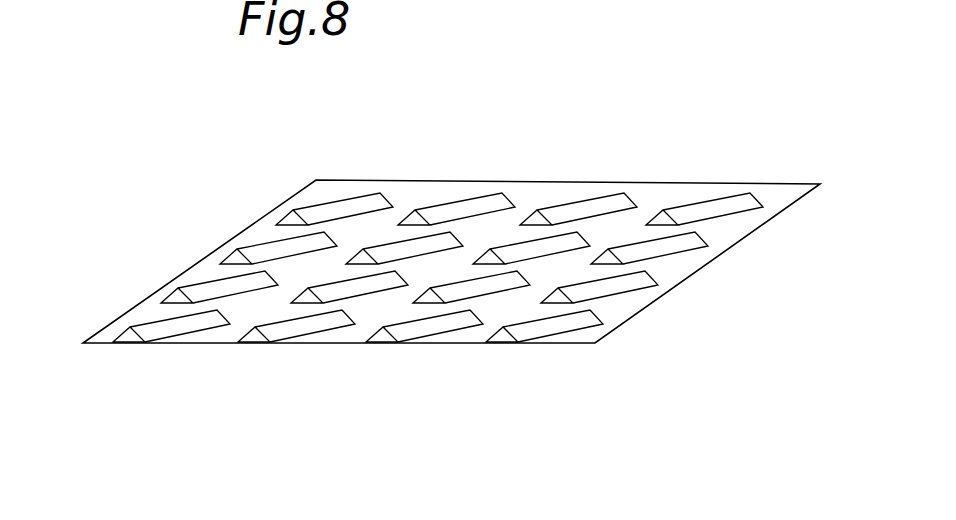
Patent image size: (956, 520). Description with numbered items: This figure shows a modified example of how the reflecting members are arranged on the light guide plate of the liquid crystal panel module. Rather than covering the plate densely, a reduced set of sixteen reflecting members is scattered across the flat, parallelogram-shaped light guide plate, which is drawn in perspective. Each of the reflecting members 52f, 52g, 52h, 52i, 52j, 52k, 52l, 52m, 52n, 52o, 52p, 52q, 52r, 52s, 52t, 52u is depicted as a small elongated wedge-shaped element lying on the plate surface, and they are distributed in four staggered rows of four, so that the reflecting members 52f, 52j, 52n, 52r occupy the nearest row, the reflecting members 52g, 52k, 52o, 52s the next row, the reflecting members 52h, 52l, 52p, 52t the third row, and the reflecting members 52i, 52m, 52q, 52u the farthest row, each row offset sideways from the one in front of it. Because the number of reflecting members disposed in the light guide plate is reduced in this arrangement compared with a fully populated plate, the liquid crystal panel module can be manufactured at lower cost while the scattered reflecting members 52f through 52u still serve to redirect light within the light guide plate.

The reflecting member 52f is at (162, 330).
The reflecting member 52g is at (198, 288).
The reflecting member 52h is at (267, 250).
The reflecting member 52i is at (350, 197).
The reflecting member 52j is at (287, 335).
The reflecting member 52k is at (363, 293).
The reflecting member 52l is at (392, 243).
The reflecting member 52m is at (462, 205).
The reflecting member 52n is at (425, 332).
The reflecting member 52o is at (487, 290).
The reflecting member 52p is at (500, 243).
The reflecting member 52q is at (562, 203).
The reflecting member 52r is at (533, 333).
The reflecting member 52s is at (608, 292).
The reflecting member 52t is at (630, 247).
The reflecting member 52u is at (688, 205).